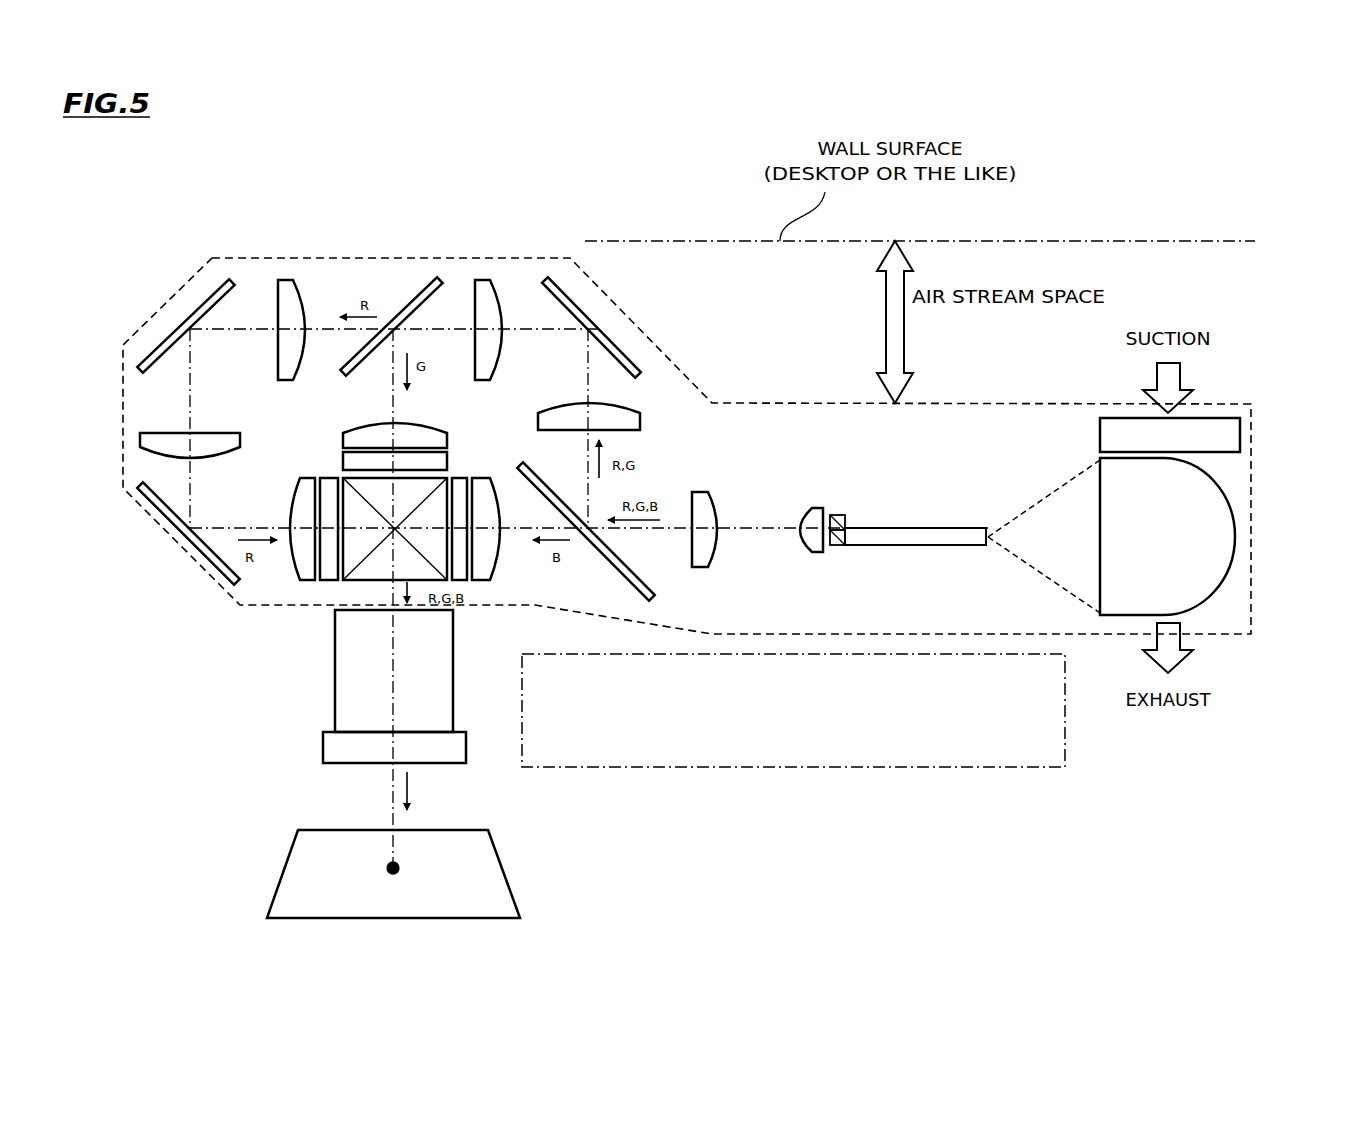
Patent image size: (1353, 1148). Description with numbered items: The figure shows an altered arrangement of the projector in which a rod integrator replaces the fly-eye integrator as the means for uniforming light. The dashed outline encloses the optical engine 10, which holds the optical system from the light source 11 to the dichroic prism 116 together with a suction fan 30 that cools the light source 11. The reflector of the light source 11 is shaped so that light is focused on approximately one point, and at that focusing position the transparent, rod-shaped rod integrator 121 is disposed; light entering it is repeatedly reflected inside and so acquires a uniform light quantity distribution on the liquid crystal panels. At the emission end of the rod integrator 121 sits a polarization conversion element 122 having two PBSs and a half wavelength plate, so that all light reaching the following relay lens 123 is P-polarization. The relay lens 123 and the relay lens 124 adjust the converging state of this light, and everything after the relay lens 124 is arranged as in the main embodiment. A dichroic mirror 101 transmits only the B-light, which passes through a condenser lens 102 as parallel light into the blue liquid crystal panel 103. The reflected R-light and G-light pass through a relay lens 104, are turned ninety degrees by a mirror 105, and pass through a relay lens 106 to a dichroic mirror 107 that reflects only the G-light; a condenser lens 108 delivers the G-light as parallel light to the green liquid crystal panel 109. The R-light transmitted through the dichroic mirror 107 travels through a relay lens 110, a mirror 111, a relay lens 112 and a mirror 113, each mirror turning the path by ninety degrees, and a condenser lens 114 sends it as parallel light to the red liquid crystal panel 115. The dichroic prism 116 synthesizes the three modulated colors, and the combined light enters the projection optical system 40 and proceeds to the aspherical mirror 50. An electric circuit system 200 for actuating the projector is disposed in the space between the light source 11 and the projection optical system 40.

The optical engine 10 is at (1230, 403).
The light source 11 is at (1223, 527).
The suction fan 30 is at (1115, 415).
The projection optical system 40 is at (343, 682).
The aspherical mirror 50 is at (295, 875).
The dichroic mirror 101 is at (612, 563).
The condenser lens 102 is at (483, 488).
The liquid crystal panel 103 is at (457, 492).
The relay lens 104 is at (630, 407).
The mirror 105 is at (610, 330).
The relay lens 106 is at (490, 280).
The dichroic mirror 107 is at (437, 280).
The condenser lens 108 is at (373, 429).
The liquid crystal panel 109 is at (348, 449).
The relay lens 110 is at (293, 308).
The mirror 111 is at (200, 310).
The relay lens 112 is at (210, 438).
The mirror 113 is at (180, 543).
The condenser lens 114 is at (303, 497).
The liquid crystal panel 115 is at (327, 490).
The dichroic prism 116 is at (355, 573).
The rod integrator 121 is at (915, 527).
The polarization conversion element 122 is at (840, 548).
The relay lens 123 is at (813, 507).
The relay lens 124 is at (710, 492).
The electric circuit system 200 is at (802, 767).